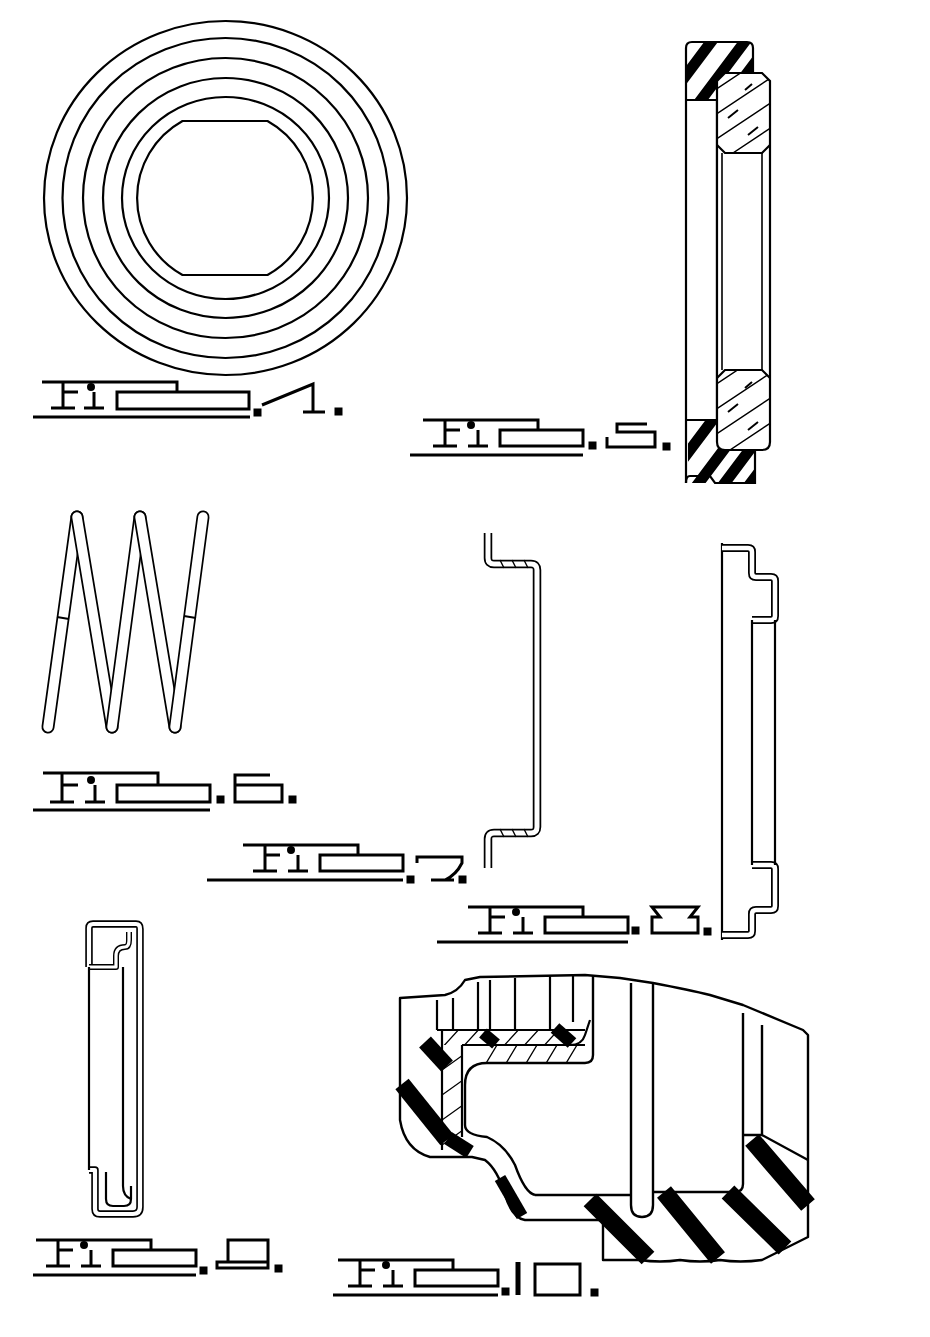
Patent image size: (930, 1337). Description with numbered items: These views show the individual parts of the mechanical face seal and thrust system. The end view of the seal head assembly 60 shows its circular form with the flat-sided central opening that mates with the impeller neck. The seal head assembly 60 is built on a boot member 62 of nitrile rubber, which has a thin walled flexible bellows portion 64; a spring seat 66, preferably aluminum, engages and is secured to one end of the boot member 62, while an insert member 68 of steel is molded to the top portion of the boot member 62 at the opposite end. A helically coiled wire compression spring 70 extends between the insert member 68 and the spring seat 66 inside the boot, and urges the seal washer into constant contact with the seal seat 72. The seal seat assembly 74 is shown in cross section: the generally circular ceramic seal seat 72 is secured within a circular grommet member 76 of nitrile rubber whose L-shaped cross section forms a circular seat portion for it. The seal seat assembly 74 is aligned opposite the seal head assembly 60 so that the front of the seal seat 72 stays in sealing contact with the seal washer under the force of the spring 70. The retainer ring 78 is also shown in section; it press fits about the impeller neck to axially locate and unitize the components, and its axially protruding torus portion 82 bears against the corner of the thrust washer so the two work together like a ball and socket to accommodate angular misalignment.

In FIG. 4, the seal head assembly 60 is at (403, 113).
In FIG. 10, the boot member 62 is at (790, 1226).
In FIG. 10, the thin walled flexible bellows portion 64 is at (505, 1197).
In FIG. 8, the spring seat 66 is at (778, 578).
In FIG. 7, the insert member 68 is at (533, 560).
In FIG. 10, the insert member 68 is at (447, 1080).
In FIG. 6, the helically coiled wire compression spring 70 is at (143, 521).
In FIG. 5, the seal seat 72 is at (772, 130).
In FIG. 5, the seal seat assembly 74 is at (726, 260).
In FIG. 5, the grommet member 76 is at (688, 76).
In FIG. 9, the retainer ring 78 is at (153, 1042).
In FIG. 9, the axially protruding torus portion 82 is at (148, 1205).